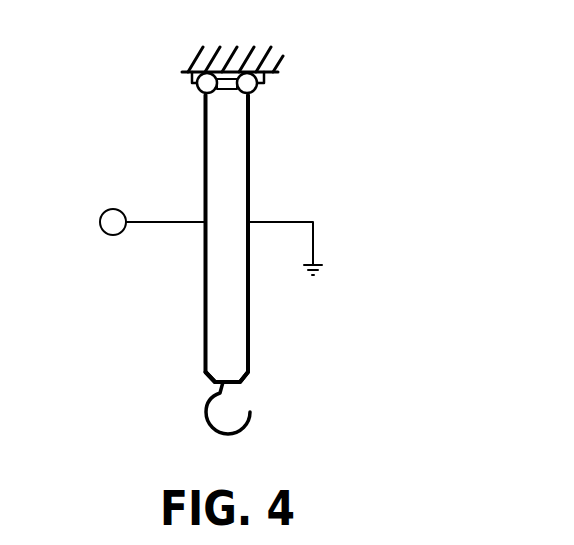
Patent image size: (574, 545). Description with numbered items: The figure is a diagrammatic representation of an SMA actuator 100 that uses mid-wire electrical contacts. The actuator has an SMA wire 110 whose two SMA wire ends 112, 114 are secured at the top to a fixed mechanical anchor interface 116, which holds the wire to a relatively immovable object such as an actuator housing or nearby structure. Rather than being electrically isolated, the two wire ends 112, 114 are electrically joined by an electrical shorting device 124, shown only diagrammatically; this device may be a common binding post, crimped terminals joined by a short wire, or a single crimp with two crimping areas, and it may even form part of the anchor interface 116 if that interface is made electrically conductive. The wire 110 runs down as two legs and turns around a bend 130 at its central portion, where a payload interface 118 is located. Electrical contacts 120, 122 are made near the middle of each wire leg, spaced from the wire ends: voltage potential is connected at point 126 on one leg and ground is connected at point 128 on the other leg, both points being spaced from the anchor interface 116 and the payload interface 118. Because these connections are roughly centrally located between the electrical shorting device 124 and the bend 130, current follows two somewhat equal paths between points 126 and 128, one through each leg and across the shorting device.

The SMA actuator 100 is at (356, 159).
The SMA wire 110 is at (250, 286).
The SMA wire end 112 is at (199, 101).
The SMA wire end 114 is at (254, 96).
The fixed mechanical anchor interface 116 is at (274, 72).
The payload interface 118 is at (250, 418).
The electrical contact 120 is at (170, 222).
The electrical contact 122 is at (315, 233).
The electrical shorting device 124 is at (221, 97).
The voltage connection point 126 is at (203, 220).
The ground connection point 128 is at (250, 218).
The bend 130 is at (256, 380).